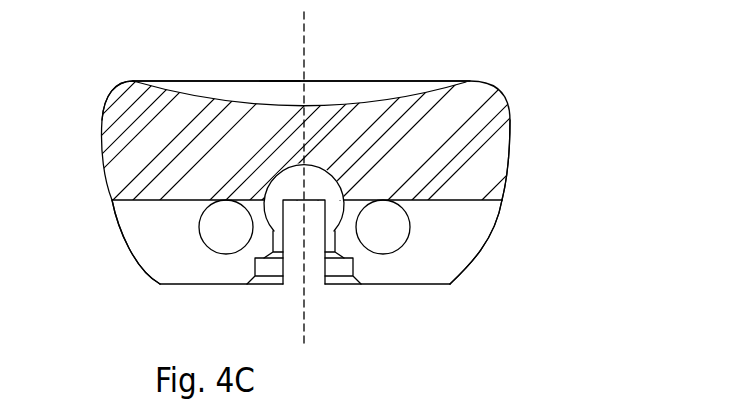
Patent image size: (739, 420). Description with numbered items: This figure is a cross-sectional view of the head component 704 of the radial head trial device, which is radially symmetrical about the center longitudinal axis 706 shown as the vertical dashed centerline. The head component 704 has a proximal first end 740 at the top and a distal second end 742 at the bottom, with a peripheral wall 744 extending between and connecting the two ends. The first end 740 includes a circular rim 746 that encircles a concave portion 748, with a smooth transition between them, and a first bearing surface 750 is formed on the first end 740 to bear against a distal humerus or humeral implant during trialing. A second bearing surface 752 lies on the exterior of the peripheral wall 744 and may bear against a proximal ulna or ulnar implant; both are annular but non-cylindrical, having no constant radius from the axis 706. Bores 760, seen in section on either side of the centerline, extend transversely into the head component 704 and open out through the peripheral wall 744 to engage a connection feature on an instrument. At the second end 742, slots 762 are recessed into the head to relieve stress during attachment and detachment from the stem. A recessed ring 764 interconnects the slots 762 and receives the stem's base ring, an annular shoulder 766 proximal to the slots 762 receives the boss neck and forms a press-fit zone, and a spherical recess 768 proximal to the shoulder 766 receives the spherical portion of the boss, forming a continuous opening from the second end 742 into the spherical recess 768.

The head component 704 is at (533, 98).
The center longitudinal axis 706 is at (305, 36).
The first end 740 is at (383, 82).
The second end 742 is at (402, 285).
The peripheral wall 744 is at (509, 158).
The circular rim 746 is at (133, 82).
The concave portion 748 is at (233, 89).
The first bearing surface 750 is at (281, 82).
The second bearing surface 752 is at (500, 193).
The bores 760 is at (220, 245).
The slots 762 is at (145, 245).
The recessed ring 764 is at (267, 270).
The annular shoulder 766 is at (263, 243).
The spherical recess 768 is at (273, 183).